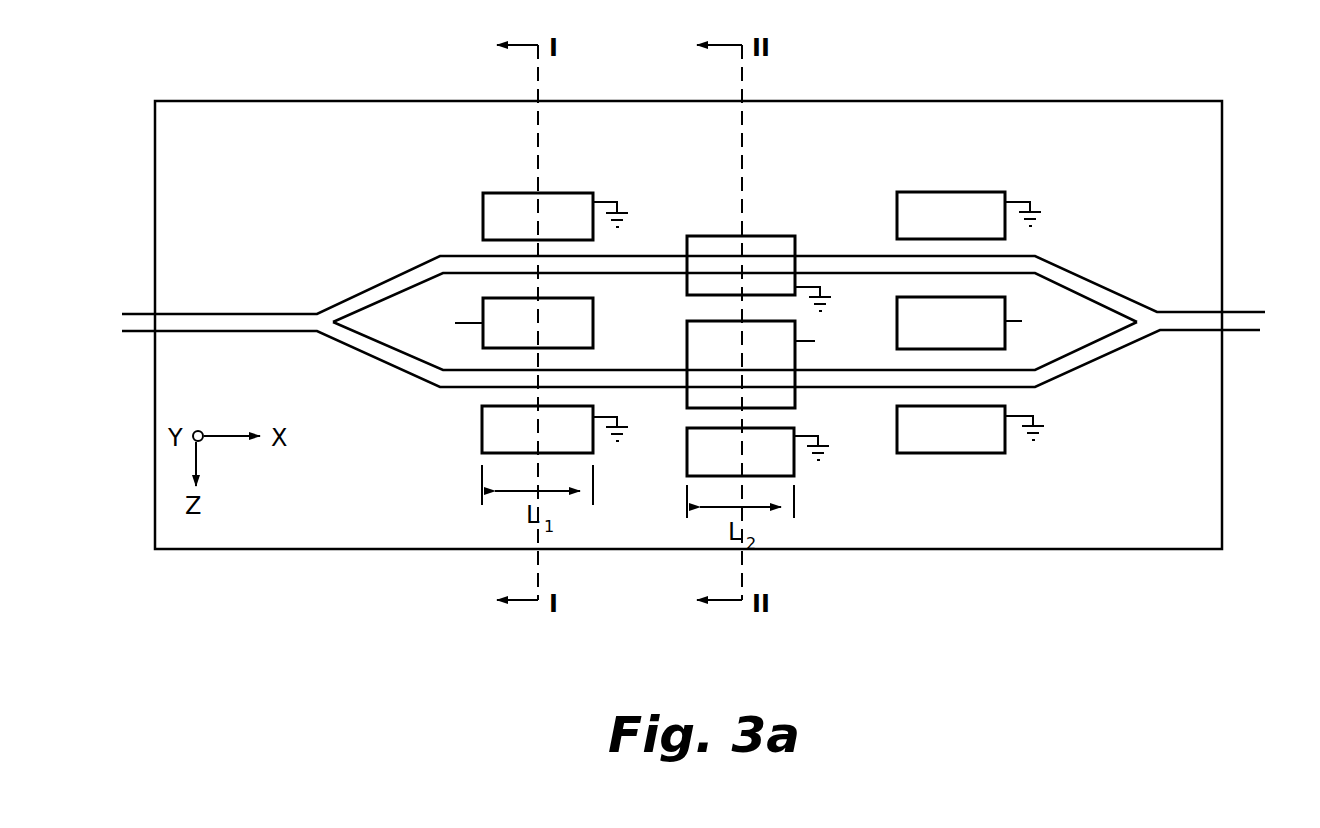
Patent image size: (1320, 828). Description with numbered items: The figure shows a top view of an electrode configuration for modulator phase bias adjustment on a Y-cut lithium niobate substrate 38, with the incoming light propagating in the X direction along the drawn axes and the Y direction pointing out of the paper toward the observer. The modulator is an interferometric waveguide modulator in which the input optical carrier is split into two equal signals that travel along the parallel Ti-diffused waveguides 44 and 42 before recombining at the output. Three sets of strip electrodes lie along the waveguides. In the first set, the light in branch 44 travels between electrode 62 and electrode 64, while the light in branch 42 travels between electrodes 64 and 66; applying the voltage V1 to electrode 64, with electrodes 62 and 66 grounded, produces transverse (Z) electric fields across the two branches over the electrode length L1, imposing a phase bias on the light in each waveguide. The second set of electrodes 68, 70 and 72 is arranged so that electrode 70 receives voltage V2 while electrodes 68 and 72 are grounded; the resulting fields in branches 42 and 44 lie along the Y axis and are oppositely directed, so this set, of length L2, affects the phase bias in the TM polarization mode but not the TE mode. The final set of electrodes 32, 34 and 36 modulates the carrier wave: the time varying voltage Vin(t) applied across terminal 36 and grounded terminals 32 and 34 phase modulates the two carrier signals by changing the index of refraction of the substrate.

The substrate 38 is at (1222, 170).
The waveguide 44 is at (372, 288).
The waveguide 42 is at (386, 365).
The electrode 62 is at (506, 193).
The electrode 64 is at (593, 320).
The electrode 66 is at (482, 430).
The electrode 68 is at (766, 236).
The electrode 70 is at (687, 345).
The electrode 72 is at (684, 458).
The electrode 32 is at (942, 192).
The electrode 36 is at (897, 330).
The electrode 34 is at (948, 453).